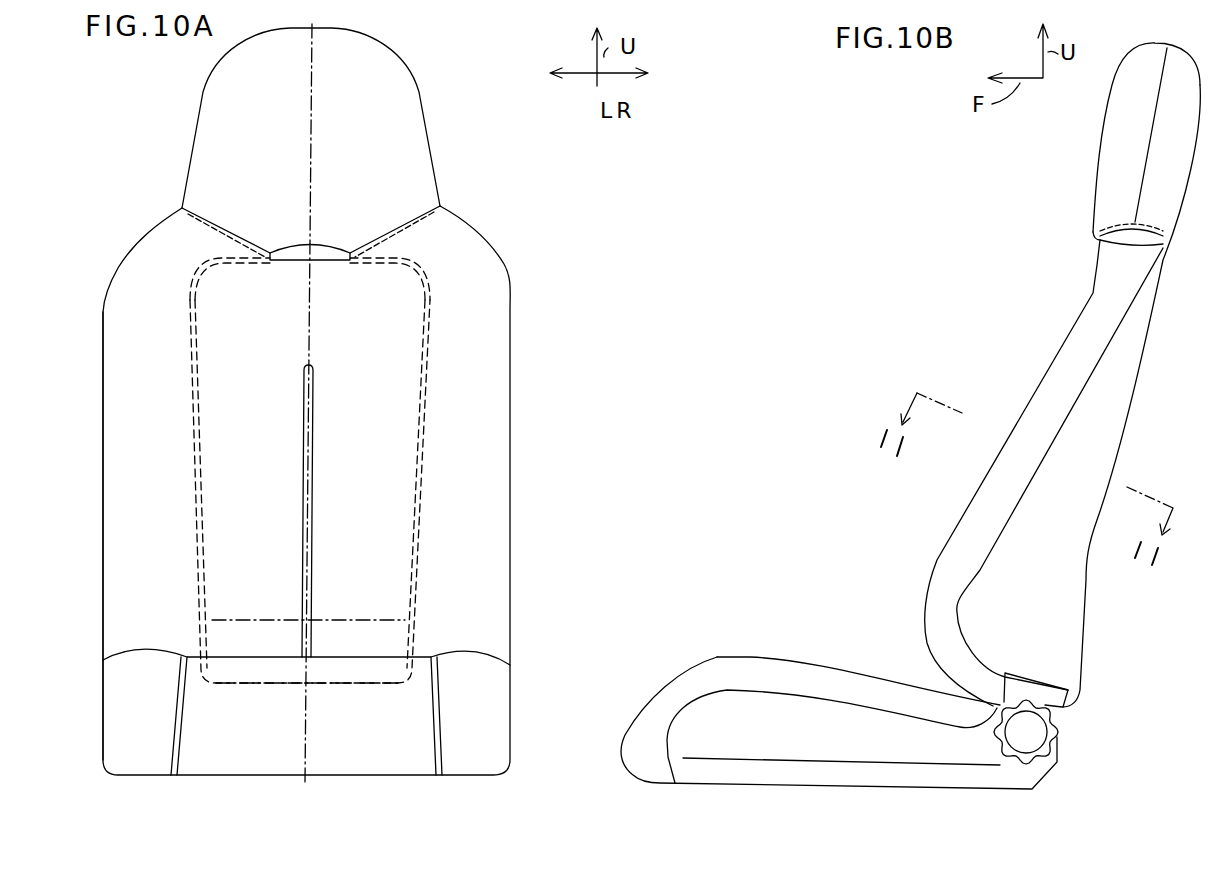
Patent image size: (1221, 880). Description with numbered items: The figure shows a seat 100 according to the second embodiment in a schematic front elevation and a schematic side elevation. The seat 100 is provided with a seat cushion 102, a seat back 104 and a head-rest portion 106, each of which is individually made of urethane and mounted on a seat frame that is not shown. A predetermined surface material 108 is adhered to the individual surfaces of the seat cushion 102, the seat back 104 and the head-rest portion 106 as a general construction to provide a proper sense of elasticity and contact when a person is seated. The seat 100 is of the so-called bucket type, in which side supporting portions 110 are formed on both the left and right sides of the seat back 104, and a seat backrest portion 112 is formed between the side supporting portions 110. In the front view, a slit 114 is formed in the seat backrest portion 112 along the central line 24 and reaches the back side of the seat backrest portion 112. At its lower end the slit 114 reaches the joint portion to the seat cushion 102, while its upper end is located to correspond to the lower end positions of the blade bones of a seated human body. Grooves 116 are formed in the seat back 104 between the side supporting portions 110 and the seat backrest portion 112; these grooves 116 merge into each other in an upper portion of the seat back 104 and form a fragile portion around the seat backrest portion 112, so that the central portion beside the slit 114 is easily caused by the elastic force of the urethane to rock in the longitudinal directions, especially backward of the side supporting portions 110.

In FIG. 10A, the central line 24 is at (312, 106).
In FIG. 10A, the seat 100 is at (605, 192).
In FIG. 10B, the seat 100 is at (981, 235).
In FIG. 10A, the seat cushion 102 is at (472, 642).
In FIG. 10B, the seat cushion 102 is at (795, 610).
In FIG. 10A, the seat back 104 is at (554, 392).
In FIG. 10B, the seat back 104 is at (966, 368).
In FIG. 10A, the head-rest portion 106 is at (424, 146).
In FIG. 10B, the head-rest portion 106 is at (1110, 136).
In FIG. 10A, the surface material 108 is at (103, 312).
In FIG. 10B, the surface material 108 is at (1000, 498).
In FIG. 10A, the side supporting portions 110 is at (108, 378).
In FIG. 10B, the side supporting portions 110 is at (1000, 450).
In FIG. 10B, the seat backrest portion 112 is at (1100, 372).
In FIG. 10A, the slit 114 is at (313, 470).
In FIG. 10A, the grooves 116 is at (202, 476).